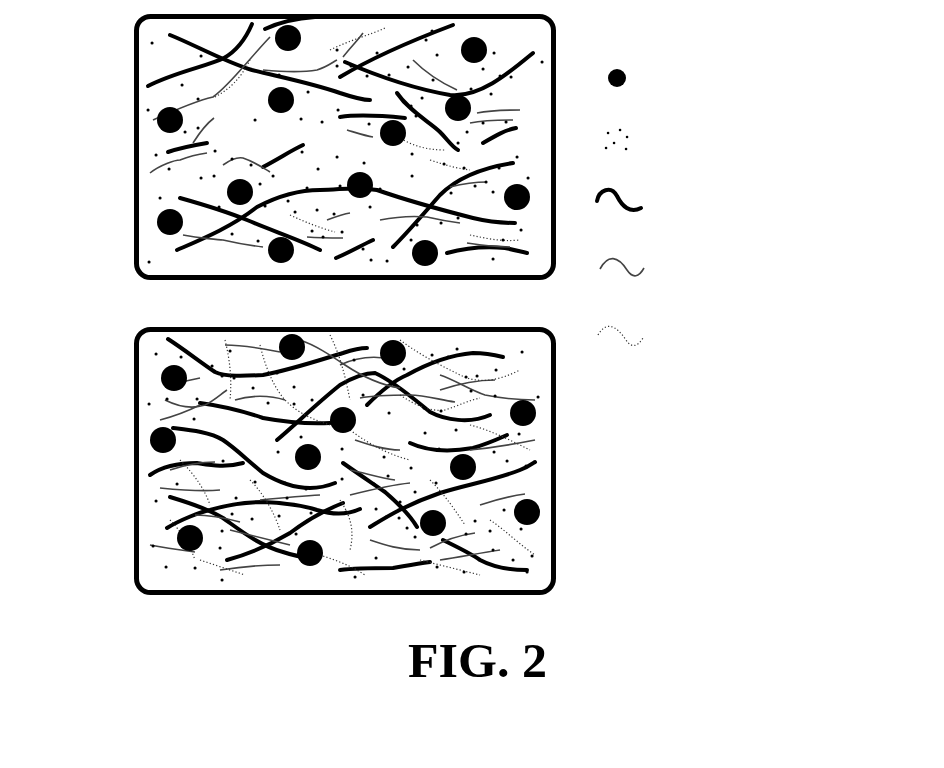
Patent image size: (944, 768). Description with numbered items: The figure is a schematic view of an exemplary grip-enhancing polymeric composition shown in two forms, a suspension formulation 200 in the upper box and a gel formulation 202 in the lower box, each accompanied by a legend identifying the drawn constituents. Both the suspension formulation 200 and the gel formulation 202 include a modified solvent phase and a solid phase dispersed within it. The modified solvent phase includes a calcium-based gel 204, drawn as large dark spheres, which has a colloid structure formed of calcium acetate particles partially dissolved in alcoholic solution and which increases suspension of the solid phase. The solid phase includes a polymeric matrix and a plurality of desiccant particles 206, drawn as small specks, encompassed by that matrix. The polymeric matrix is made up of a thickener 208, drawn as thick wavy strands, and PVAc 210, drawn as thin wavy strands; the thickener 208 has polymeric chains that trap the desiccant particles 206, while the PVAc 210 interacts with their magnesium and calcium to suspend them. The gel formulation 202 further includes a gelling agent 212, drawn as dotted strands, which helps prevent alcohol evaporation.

The suspension formulation 200 is at (100, 189).
The gel formulation 202 is at (100, 469).
The calcium-based gel 204 is at (752, 86).
The desiccant particles 206 is at (751, 149).
The thickener 208 is at (747, 209).
The PVAc 210 is at (748, 276).
The gelling agent 212 is at (747, 343).